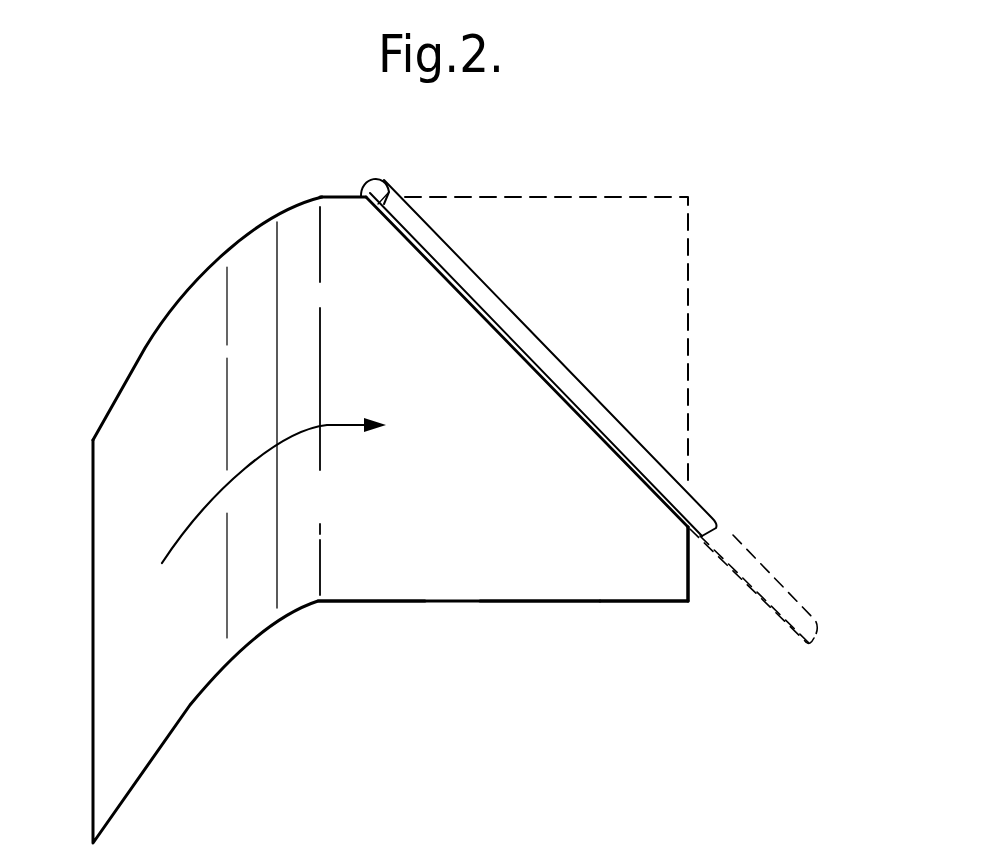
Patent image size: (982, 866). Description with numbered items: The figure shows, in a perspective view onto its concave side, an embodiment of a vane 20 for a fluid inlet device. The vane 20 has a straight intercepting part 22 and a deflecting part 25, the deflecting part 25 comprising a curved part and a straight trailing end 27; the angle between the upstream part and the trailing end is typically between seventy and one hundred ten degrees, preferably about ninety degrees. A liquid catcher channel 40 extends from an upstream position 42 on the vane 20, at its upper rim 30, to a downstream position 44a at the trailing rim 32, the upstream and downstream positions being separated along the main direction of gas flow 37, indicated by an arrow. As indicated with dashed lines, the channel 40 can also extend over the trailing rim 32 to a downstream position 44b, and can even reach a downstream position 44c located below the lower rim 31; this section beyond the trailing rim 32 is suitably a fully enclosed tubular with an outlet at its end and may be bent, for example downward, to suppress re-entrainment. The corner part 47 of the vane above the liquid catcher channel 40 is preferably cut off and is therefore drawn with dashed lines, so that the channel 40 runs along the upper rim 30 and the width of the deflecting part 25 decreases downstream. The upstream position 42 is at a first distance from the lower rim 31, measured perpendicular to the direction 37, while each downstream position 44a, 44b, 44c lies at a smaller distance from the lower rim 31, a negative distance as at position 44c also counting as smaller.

The vane 20 is at (93, 589).
The straight intercepting part 22 is at (104, 421).
The deflecting part 25 is at (313, 602).
The straight trailing end 27 is at (542, 602).
The upper rim 30 is at (350, 194).
The lower rim 31 is at (618, 602).
The trailing rim 32 is at (690, 583).
The main direction of gas flow 37 is at (265, 444).
The liquid catcher channel 40 is at (528, 323).
The upstream position 42 is at (395, 198).
The downstream position 44a is at (723, 533).
The downstream position 44b is at (762, 585).
The downstream position 44c is at (813, 640).
The corner part 47 is at (695, 312).